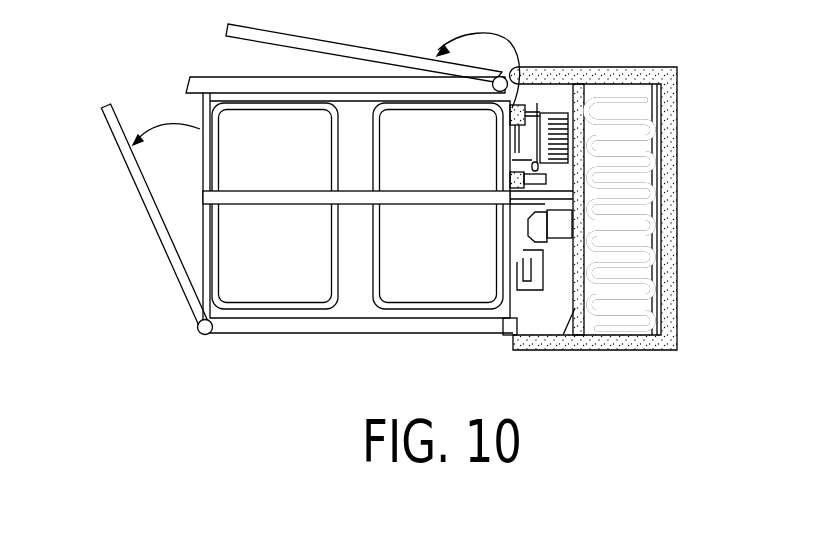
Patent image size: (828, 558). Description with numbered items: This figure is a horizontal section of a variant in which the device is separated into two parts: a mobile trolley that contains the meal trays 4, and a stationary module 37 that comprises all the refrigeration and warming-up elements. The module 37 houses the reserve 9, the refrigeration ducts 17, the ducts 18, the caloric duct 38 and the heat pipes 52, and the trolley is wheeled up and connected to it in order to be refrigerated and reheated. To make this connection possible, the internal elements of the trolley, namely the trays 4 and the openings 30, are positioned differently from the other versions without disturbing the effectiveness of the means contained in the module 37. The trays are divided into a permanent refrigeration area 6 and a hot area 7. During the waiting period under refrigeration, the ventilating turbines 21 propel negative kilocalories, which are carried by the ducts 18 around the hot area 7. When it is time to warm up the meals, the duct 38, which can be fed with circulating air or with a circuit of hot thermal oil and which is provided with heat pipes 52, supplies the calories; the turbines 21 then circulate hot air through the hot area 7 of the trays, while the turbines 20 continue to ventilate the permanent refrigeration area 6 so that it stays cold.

The meal trays 4 is at (405, 288).
The permanent refrigeration area 6 is at (362, 286).
The hot area 7 is at (362, 172).
The reserve 9 is at (657, 68).
The refrigeration ducts 17 is at (525, 292).
The ducts 18 is at (512, 132).
The turbines 20 is at (532, 227).
The ventilating turbines 21 is at (508, 180).
The openings 30 is at (318, 38).
The module 37 is at (677, 248).
The caloric duct 38 is at (550, 110).
The heat pipes 52 is at (540, 114).